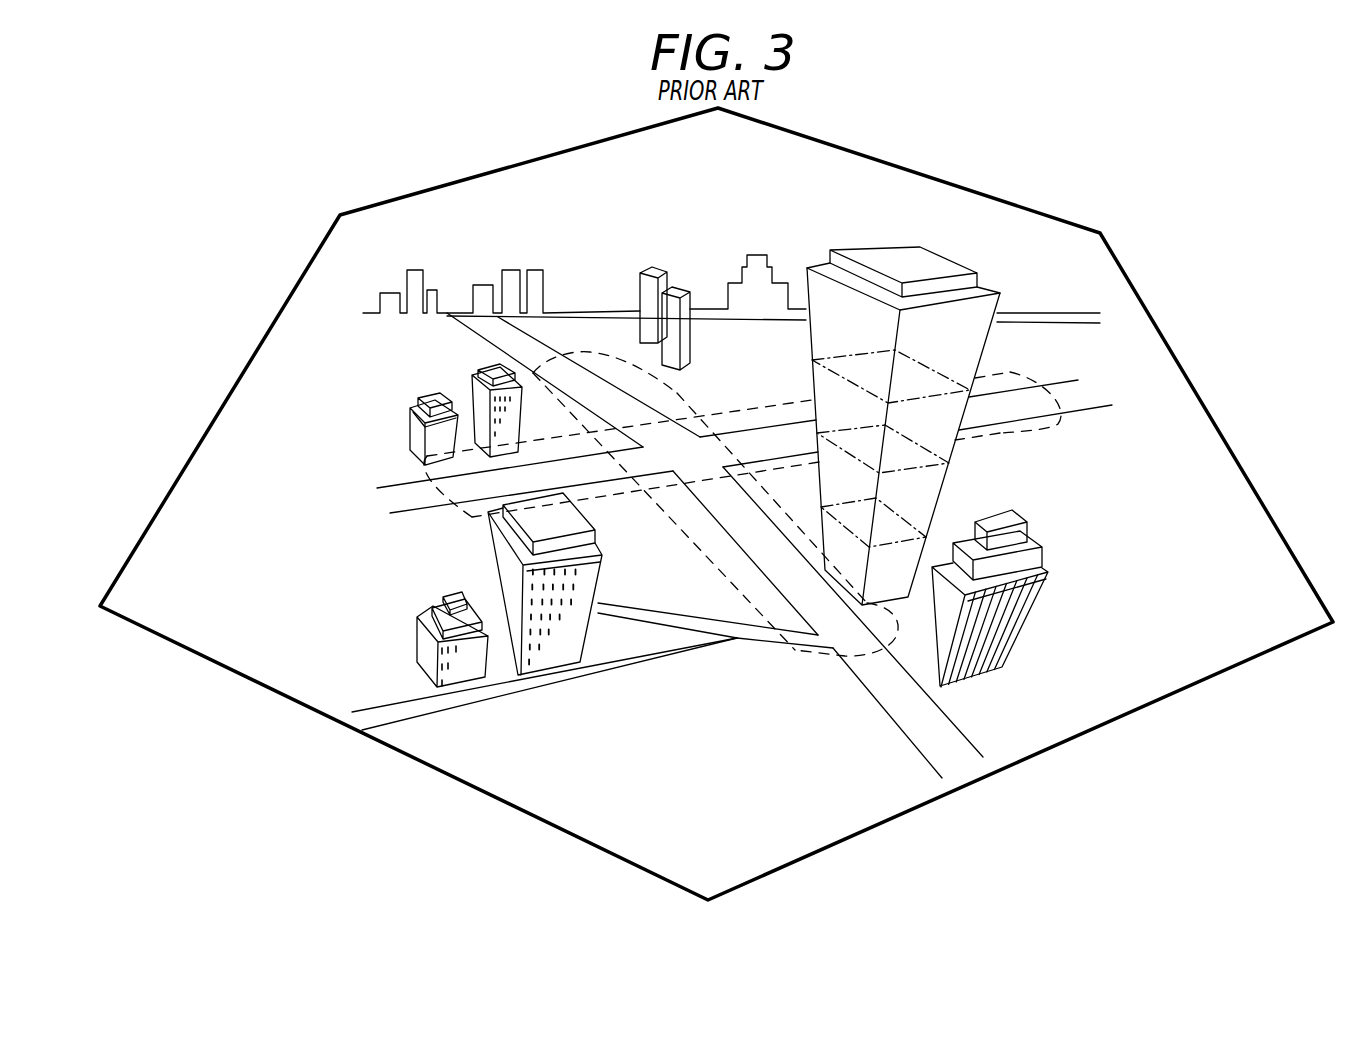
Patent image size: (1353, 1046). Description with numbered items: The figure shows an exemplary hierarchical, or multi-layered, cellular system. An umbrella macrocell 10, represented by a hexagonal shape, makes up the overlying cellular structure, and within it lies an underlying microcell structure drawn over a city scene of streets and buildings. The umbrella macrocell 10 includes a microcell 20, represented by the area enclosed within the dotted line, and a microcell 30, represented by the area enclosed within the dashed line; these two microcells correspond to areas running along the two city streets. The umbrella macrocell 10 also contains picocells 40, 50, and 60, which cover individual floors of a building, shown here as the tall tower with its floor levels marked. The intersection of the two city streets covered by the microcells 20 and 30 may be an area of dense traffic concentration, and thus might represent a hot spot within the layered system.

The umbrella macrocell 10 is at (425, 765).
The microcell 20 is at (600, 355).
The microcell 30 is at (435, 489).
The picocell 40 is at (967, 392).
The picocell 50 is at (942, 467).
The picocell 60 is at (873, 550).